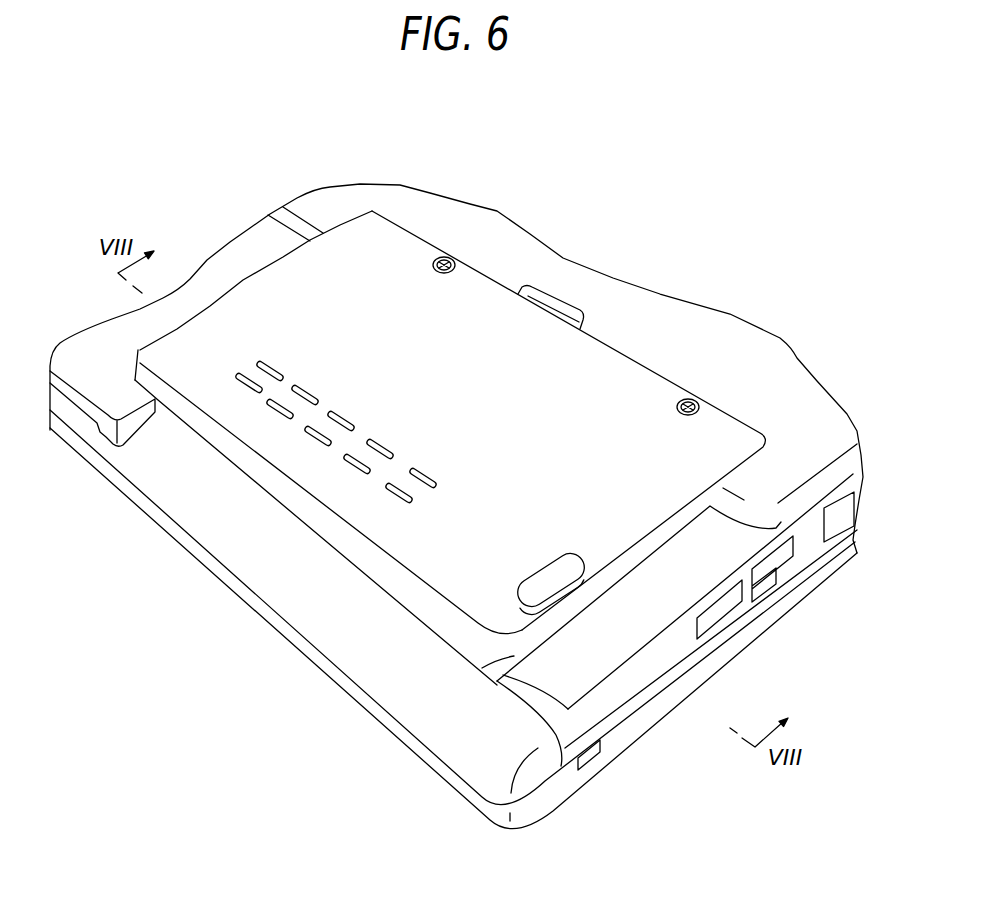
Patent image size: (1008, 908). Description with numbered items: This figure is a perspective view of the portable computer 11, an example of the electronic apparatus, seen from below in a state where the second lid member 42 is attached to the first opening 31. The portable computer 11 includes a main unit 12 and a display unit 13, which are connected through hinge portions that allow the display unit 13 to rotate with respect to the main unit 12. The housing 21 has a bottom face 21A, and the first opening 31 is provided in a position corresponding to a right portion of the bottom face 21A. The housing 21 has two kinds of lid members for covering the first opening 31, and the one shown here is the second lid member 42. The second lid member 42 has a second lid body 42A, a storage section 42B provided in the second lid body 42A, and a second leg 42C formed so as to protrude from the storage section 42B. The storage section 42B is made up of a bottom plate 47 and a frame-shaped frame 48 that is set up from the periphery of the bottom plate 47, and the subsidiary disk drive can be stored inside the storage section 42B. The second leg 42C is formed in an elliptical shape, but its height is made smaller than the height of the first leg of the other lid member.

The portable computer 11 is at (636, 188).
The main unit 12 is at (667, 254).
The display unit 13 is at (644, 741).
The housing 21 is at (816, 378).
The bottom face 21A is at (741, 335).
The first opening 31 is at (512, 265).
The second lid member 42 is at (389, 233).
The second lid body 42A is at (334, 243).
The storage section 42B is at (623, 390).
The second leg 42C is at (567, 557).
The bottom plate 47 is at (412, 555).
The frame 48 is at (307, 516).